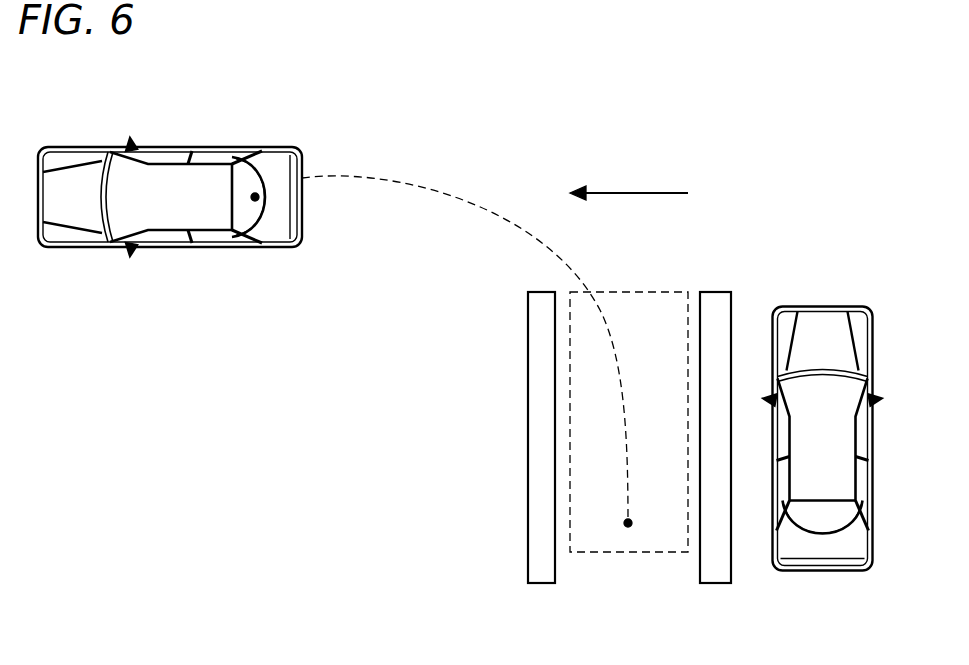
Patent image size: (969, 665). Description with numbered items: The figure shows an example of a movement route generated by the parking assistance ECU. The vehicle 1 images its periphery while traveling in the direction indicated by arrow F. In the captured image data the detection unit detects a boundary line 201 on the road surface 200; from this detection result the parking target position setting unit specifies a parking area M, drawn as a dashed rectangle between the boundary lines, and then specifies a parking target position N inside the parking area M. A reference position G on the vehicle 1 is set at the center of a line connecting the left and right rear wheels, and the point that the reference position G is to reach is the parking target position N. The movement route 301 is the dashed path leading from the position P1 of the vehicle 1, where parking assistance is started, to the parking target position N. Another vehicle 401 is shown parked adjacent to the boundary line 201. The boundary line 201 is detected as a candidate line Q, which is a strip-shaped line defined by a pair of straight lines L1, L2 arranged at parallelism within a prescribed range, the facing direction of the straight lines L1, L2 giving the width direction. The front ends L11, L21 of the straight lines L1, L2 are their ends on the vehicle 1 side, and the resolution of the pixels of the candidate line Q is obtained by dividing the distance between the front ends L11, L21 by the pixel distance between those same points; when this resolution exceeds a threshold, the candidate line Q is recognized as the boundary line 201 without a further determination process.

The vehicle 1 is at (170, 172).
The position of the vehicle P1 is at (124, 150).
The reference position G is at (257, 195).
The movement route 301 is at (488, 196).
The parking target position N is at (630, 521).
The boundary line 201 is at (612, 406).
The candidate line Q is at (548, 291).
The parking area M is at (648, 291).
The front end of straight line L1 L11 is at (557, 291).
The front end of straight line L2 L21 is at (528, 292).
The straight line L1 is at (556, 338).
The straight line L2 is at (528, 386).
The arrow indicating traveling direction F is at (631, 191).
The road surface 200 is at (590, 573).
The another vehicle 401 is at (874, 360).